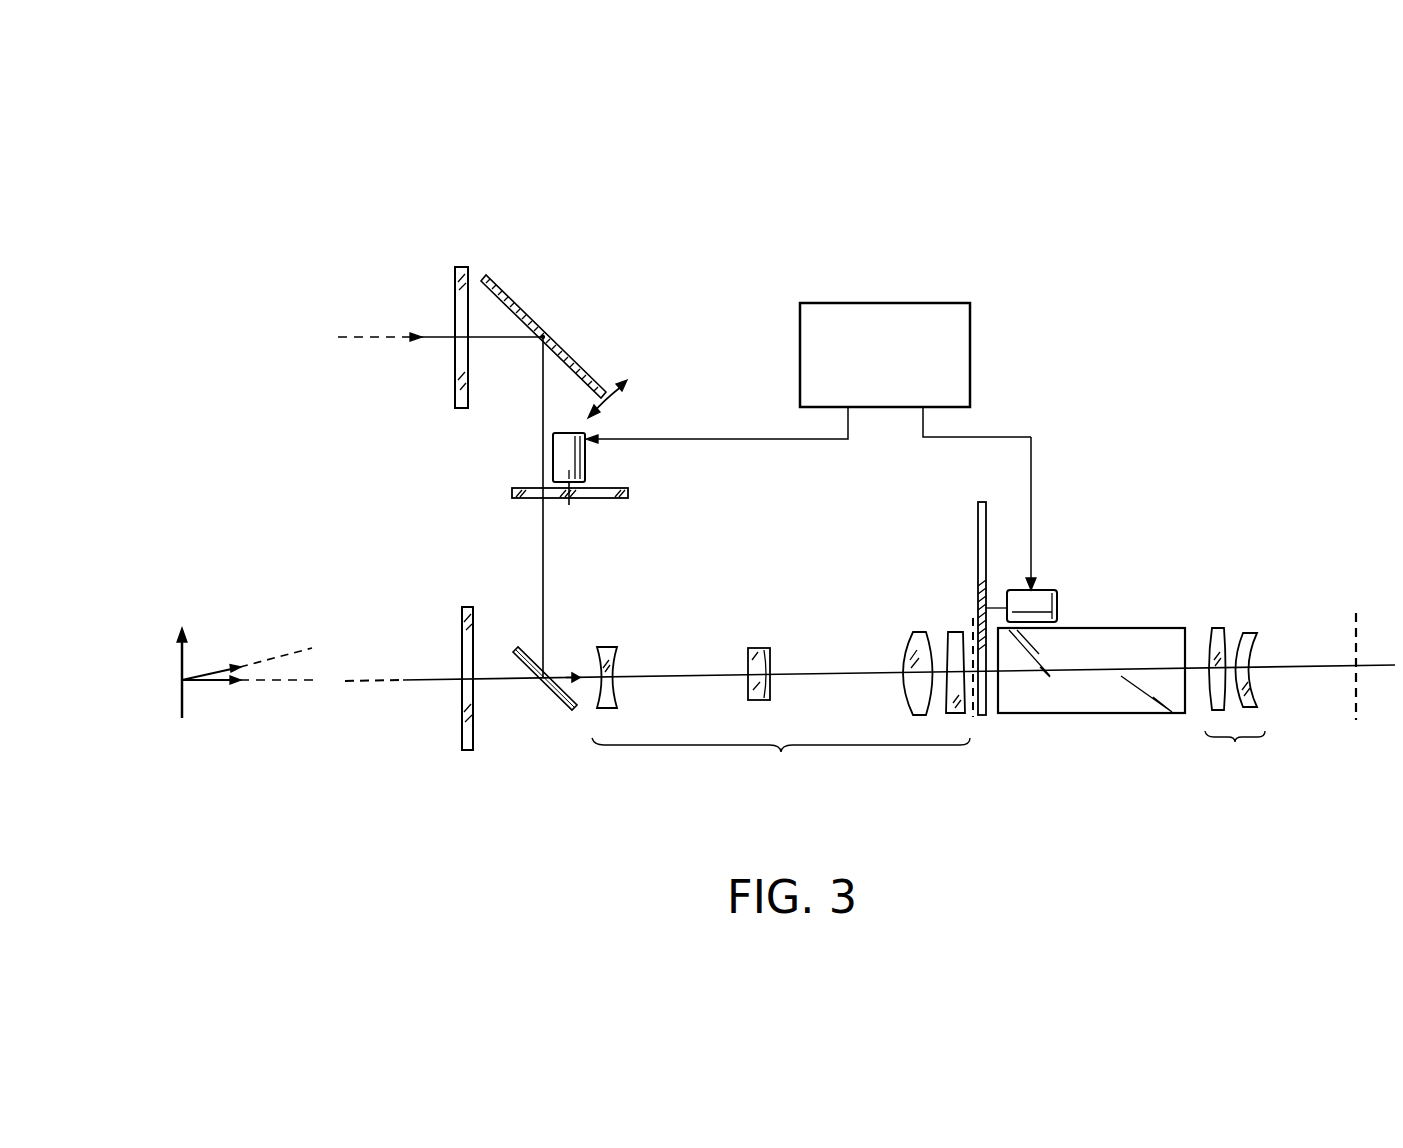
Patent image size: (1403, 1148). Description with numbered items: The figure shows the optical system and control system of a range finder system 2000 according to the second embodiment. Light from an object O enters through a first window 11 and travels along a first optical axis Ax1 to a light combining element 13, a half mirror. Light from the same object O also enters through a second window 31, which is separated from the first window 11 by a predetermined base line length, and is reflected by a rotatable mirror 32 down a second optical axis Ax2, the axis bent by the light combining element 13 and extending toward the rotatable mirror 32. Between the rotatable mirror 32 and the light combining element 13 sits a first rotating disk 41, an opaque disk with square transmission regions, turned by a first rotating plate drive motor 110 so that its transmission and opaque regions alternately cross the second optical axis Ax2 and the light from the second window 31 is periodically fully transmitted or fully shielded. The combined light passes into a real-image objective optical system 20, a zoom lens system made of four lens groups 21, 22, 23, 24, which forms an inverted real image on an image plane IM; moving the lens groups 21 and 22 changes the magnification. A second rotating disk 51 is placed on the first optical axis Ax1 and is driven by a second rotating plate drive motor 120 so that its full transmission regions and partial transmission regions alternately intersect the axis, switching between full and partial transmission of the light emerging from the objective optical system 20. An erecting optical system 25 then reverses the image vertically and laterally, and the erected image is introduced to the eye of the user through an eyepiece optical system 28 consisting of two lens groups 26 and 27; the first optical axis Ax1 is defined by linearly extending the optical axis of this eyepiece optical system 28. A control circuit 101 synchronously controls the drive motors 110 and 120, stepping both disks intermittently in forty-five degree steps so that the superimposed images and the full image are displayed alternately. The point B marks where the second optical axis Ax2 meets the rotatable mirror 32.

The range finder system 2000 is at (1007, 272).
The control circuit 101 is at (970, 362).
The first rotating plate drive motor 110 is at (588, 470).
The second rotating plate drive motor 120 is at (1040, 590).
The second window 31 is at (462, 266).
The rotatable mirror 32 is at (519, 307).
The first rotating disk 41 is at (530, 487).
The second rotating disk 51 is at (977, 519).
The first window 11 is at (463, 742).
The light combining element 13 is at (557, 714).
The real-image objective optical system 20 is at (781, 761).
The lens group 21 is at (606, 646).
The lens group 22 is at (757, 647).
The lens group 23 is at (910, 637).
The lens group 24 is at (955, 631).
The erecting optical system 25 is at (1132, 627).
The lens group 26 is at (1215, 627).
The lens group 27 is at (1244, 632).
The eyepiece optical system 28 is at (1235, 754).
The object O is at (178, 702).
The point B is at (540, 341).
The image plane IM is at (975, 720).
The first optical axis Ax1 is at (828, 672).
The second optical axis Ax2 is at (543, 556).